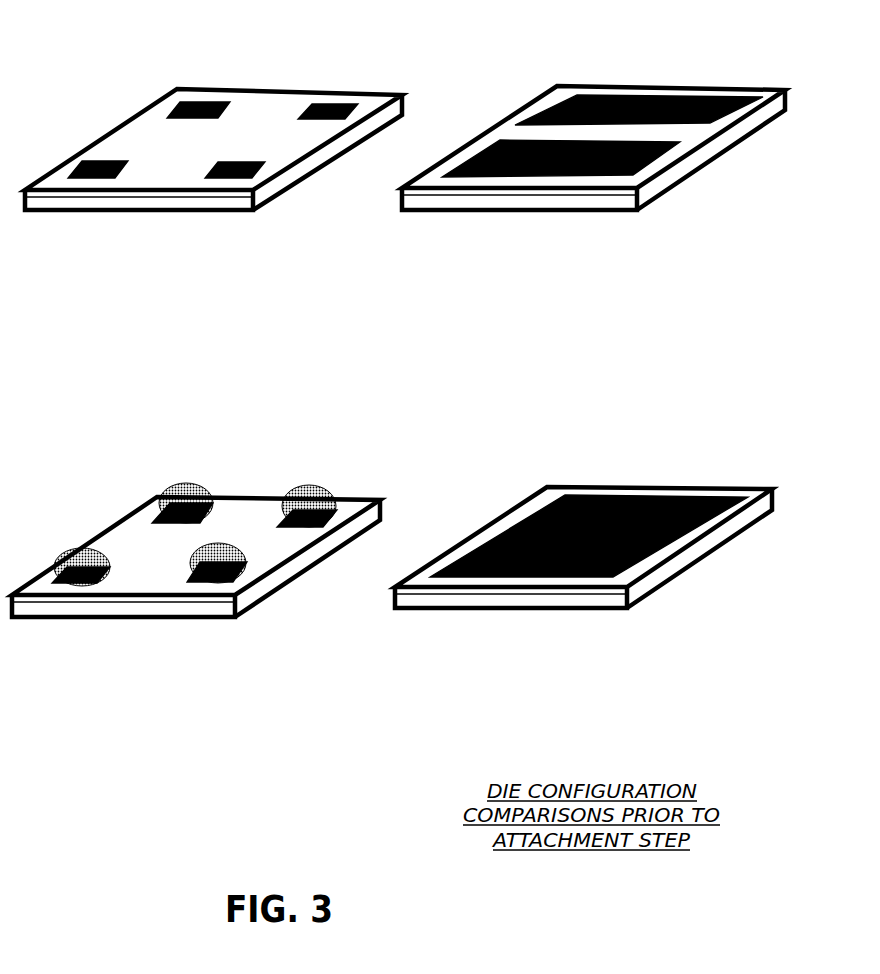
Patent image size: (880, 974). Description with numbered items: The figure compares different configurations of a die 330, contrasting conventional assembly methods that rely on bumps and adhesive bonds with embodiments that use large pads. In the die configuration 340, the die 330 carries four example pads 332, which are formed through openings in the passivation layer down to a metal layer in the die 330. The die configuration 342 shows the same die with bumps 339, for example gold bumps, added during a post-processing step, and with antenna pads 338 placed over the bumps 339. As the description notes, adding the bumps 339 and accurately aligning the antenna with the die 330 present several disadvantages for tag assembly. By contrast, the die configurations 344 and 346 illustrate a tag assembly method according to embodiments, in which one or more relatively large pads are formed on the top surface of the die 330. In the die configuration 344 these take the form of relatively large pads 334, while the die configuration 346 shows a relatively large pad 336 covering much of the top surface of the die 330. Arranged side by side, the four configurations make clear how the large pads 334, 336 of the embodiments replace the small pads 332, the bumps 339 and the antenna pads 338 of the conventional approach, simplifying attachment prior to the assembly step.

The die 330 is at (533, 95).
The pads 332 is at (137, 172).
The relatively large pad 334 is at (718, 122).
The relatively large pad 336 is at (634, 568).
The antenna pads 338 is at (116, 573).
The bumps 339 is at (300, 478).
The die configuration 340 is at (88, 48).
The die configuration 342 is at (65, 416).
The die configuration 344 is at (790, 31).
The die configuration 346 is at (768, 438).